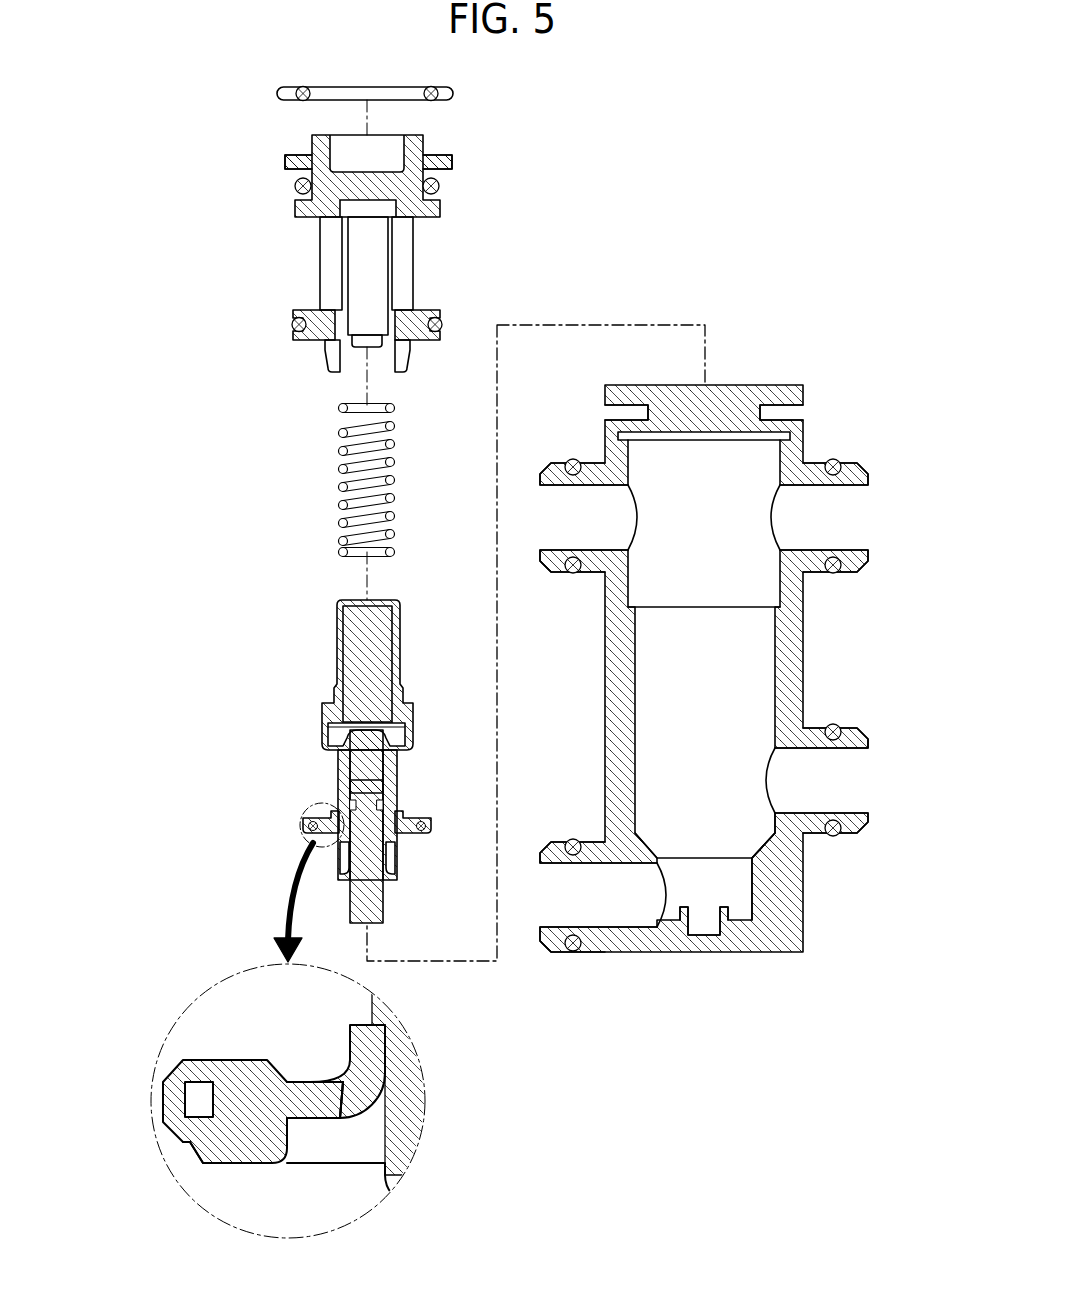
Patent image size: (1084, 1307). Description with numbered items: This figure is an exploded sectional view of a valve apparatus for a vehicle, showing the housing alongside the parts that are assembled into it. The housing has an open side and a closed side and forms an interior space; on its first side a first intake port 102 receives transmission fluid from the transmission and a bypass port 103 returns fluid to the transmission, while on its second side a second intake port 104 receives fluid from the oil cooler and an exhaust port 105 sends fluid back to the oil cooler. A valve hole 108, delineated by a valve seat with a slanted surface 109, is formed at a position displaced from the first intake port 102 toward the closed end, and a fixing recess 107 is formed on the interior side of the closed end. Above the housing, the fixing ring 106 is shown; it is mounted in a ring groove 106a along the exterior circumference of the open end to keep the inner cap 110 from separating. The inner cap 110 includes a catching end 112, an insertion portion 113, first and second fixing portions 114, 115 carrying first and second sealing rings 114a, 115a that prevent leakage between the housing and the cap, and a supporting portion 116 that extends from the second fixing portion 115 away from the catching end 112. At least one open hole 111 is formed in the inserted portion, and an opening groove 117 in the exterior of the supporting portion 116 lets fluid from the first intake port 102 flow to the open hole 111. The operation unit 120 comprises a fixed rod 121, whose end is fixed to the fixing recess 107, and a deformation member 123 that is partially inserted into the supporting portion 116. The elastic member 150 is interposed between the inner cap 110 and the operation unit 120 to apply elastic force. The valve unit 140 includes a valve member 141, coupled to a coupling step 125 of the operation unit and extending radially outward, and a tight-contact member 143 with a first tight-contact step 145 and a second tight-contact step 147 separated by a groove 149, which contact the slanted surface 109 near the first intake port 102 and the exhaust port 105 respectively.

The fixing ring 106 is at (443, 96).
The inner cap 110 is at (377, 287).
The catching end 112 is at (288, 160).
The first sealing ring 114a is at (295, 186).
The first fixing portion 114 is at (322, 200).
The insertion portion 113 is at (345, 266).
The open hole 111 is at (386, 258).
The second sealing ring 115a is at (293, 324).
The second fixing portion 115 is at (315, 332).
The opening groove 117 is at (318, 357).
The supporting portion 116 is at (345, 365).
The elastic member 150 is at (393, 477).
The deformation member 123 is at (365, 633).
The operation unit 120 is at (336, 761).
The valve unit 140 is at (426, 804).
The fixed rod 121 is at (378, 903).
The ring groove 106a is at (800, 411).
The bypass port 103 is at (850, 463).
The second intake port 104 is at (552, 568).
The first intake port 102 is at (856, 730).
The slanted surface 109 is at (717, 845).
The valve hole 108 is at (773, 848).
The exhaust port 105 is at (552, 948).
The fixing recess 107 is at (705, 936).
The tight-contact member 143 is at (232, 1085).
The valve member 141 is at (300, 1080).
The coupling step 125 is at (377, 1037).
The first tight-contact step 145 is at (168, 1125).
The groove 149 is at (184, 1152).
The second tight-contact step 147 is at (205, 1165).